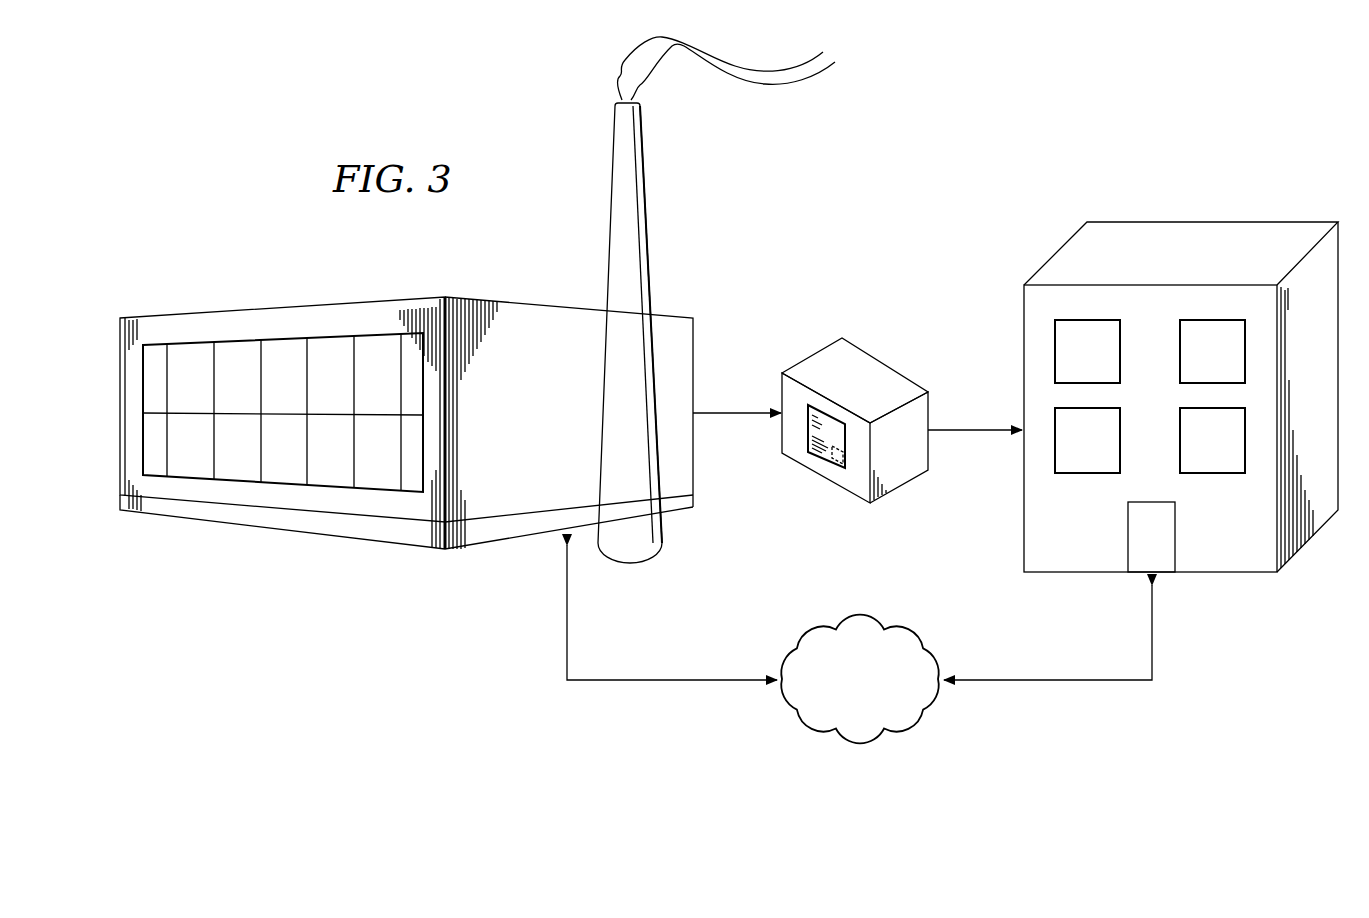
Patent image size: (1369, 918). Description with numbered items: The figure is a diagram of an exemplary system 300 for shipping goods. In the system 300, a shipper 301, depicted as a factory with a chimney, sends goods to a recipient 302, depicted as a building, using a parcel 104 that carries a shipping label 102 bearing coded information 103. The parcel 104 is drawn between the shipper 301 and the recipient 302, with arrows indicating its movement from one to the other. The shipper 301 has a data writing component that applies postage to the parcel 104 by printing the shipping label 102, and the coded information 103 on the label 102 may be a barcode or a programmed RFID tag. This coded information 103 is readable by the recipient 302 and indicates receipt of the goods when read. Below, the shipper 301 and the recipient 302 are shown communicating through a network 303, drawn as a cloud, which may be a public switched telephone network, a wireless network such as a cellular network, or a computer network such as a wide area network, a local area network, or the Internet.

The system for shipping goods 300 is at (930, 150).
The shipper 301 is at (270, 530).
The recipient 302 is at (1212, 220).
The network 303 is at (838, 693).
The shipping label 102 is at (826, 428).
The coded information 103 is at (825, 458).
The parcel 104 is at (898, 478).